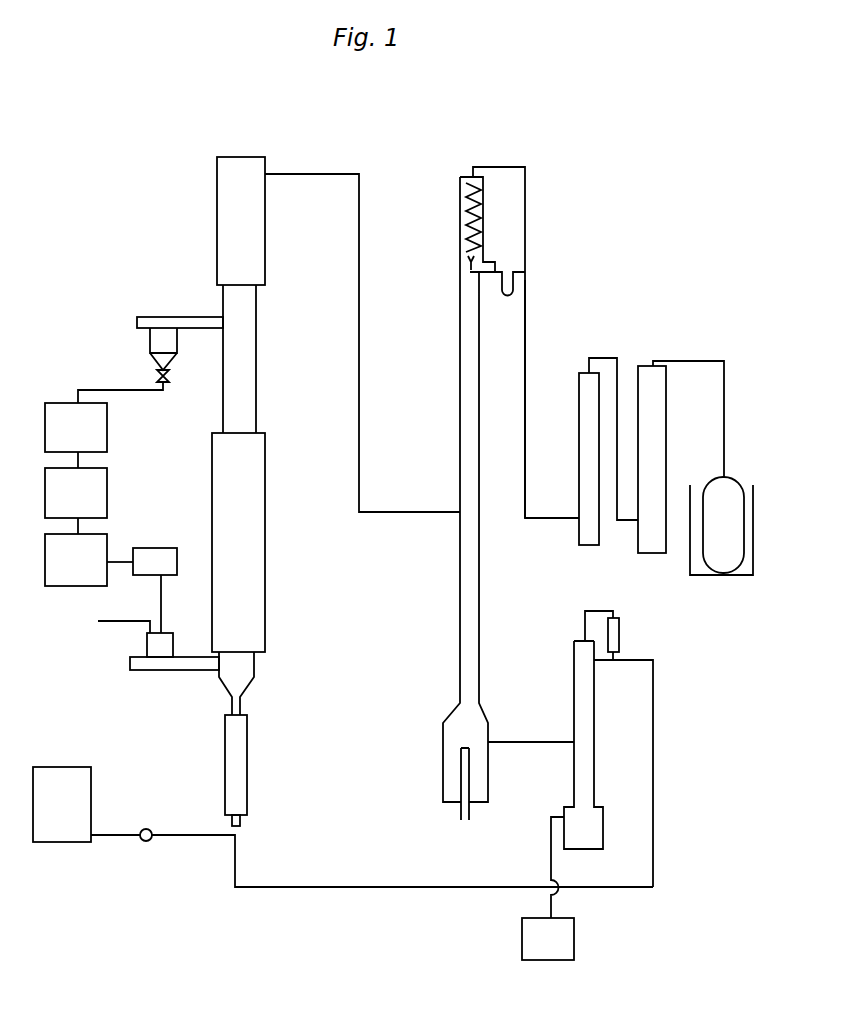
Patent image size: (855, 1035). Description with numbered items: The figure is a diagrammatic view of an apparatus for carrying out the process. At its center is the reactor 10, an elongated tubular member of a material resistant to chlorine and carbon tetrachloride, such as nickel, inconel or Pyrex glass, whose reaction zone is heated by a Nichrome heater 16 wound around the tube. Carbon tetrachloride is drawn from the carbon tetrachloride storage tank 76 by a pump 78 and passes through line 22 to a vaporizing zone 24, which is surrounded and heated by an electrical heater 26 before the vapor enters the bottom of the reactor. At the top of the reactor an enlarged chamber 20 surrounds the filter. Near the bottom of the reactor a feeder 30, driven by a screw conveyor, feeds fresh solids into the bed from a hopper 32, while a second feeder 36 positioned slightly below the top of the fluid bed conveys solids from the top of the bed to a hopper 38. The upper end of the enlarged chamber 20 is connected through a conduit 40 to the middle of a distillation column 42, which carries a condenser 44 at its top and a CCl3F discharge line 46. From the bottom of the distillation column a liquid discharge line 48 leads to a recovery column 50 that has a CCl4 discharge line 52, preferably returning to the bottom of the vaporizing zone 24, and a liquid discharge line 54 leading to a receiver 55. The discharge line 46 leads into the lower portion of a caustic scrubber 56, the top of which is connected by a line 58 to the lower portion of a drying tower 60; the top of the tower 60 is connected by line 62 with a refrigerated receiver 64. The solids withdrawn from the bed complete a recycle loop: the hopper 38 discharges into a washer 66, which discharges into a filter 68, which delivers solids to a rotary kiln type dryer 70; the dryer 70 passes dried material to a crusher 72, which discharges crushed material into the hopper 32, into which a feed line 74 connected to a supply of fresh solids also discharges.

The reactor 10 is at (257, 365).
The Nichrome heater 16 is at (265, 512).
The enlarged chamber 20 is at (265, 213).
The line 22 is at (185, 836).
The vaporizing zone 24 is at (240, 820).
The electrical heater 26 is at (247, 762).
The feeder 30 is at (199, 670).
The hopper 32 is at (147, 648).
The second feeder 36 is at (205, 330).
The hopper 38 is at (150, 345).
The conduit 40 is at (359, 232).
The distillation column 42 is at (479, 612).
The condenser 44 is at (501, 218).
The CCl3F discharge line 46 is at (525, 357).
The liquid discharge line 48 is at (521, 743).
The recovery column 50 is at (594, 748).
The CCl4 discharge line 52 is at (653, 760).
The liquid discharge line 54 is at (551, 820).
The receiver 55 is at (574, 940).
The caustic scrubber 56 is at (579, 448).
The line 58 is at (627, 352).
The drying tower 60 is at (666, 423).
The line 62 is at (696, 360).
The refrigerated receiver 64 is at (734, 484).
The washer 66 is at (107, 443).
The filter 68 is at (107, 509).
The dryer 70 is at (45, 553).
The crusher 72 is at (177, 562).
The feed line 74 is at (118, 621).
The carbon tetrachloride storage tank 76 is at (91, 790).
The pump 78 is at (150, 829).